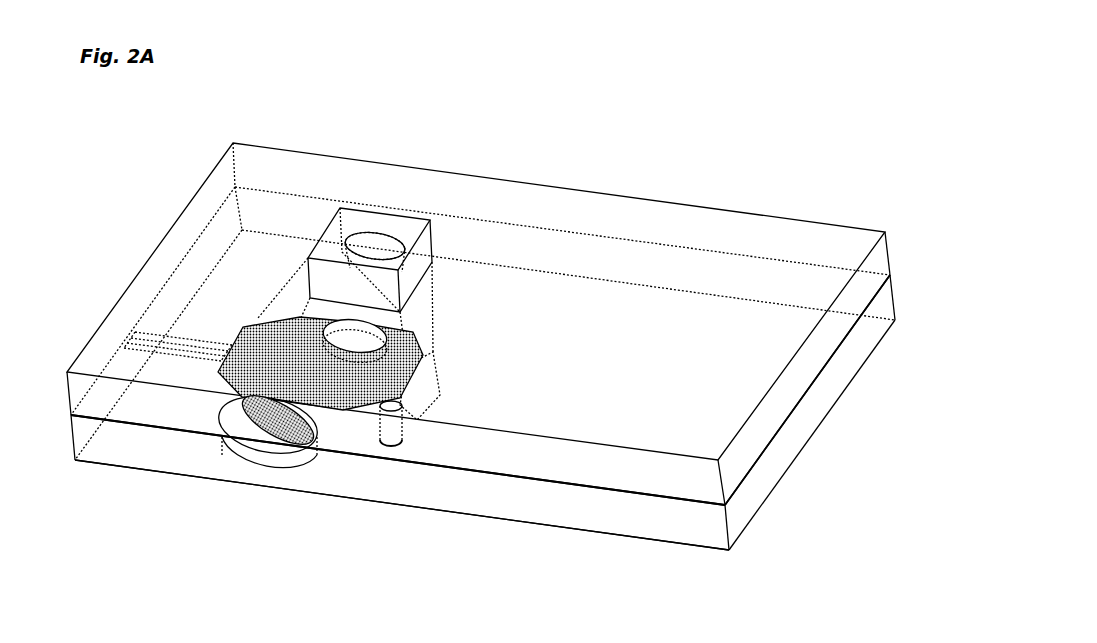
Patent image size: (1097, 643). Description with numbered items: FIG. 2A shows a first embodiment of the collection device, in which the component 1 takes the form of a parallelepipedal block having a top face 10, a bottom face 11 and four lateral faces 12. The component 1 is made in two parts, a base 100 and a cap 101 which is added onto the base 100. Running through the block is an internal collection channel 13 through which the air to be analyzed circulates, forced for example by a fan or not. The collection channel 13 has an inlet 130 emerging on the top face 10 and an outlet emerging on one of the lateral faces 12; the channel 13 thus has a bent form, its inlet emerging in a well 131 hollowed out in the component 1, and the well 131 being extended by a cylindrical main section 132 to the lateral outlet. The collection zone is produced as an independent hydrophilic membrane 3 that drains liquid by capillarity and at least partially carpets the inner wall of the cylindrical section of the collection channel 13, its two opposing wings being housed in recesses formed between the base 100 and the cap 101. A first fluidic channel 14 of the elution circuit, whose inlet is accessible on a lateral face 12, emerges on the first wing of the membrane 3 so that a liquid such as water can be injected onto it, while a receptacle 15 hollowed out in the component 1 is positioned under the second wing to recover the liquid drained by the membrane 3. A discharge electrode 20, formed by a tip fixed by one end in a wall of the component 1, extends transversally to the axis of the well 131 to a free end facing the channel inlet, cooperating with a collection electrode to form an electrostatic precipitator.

The component 1 is at (512, 338).
The top face 10 is at (685, 238).
The bottom face 11 is at (795, 500).
The lateral faces 12 is at (835, 382).
The internal collection channel 13 is at (268, 450).
The first fluidic channel 14 is at (168, 338).
The receptacle 15 is at (387, 423).
The discharge electrode 20 is at (395, 262).
The membrane 3 is at (400, 360).
The base 100 is at (556, 504).
The cap 101 is at (500, 452).
The inlet 130 is at (262, 260).
The well 131 is at (323, 258).
The cylindrical main section 132 is at (300, 355).